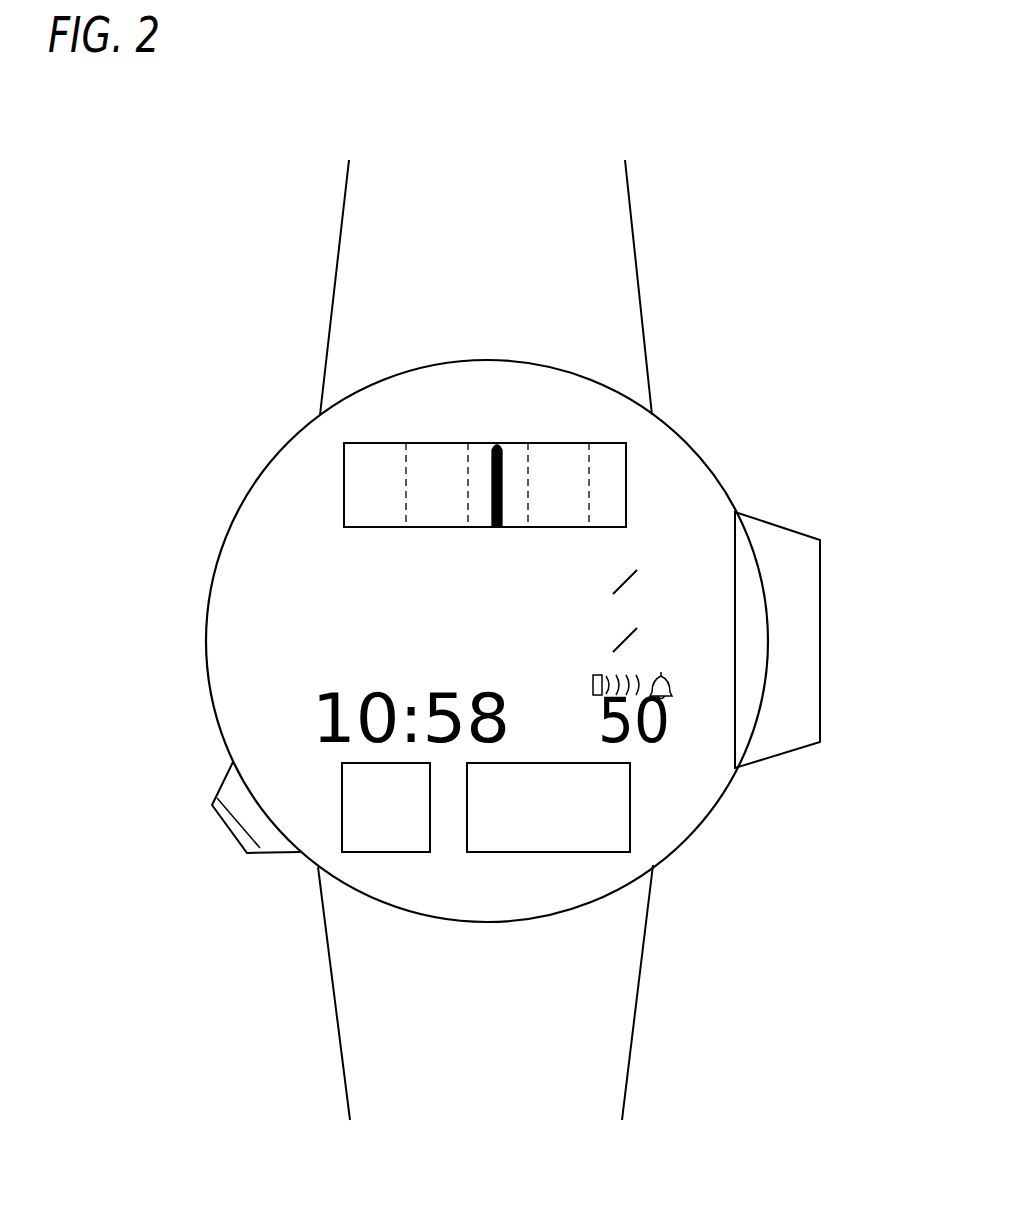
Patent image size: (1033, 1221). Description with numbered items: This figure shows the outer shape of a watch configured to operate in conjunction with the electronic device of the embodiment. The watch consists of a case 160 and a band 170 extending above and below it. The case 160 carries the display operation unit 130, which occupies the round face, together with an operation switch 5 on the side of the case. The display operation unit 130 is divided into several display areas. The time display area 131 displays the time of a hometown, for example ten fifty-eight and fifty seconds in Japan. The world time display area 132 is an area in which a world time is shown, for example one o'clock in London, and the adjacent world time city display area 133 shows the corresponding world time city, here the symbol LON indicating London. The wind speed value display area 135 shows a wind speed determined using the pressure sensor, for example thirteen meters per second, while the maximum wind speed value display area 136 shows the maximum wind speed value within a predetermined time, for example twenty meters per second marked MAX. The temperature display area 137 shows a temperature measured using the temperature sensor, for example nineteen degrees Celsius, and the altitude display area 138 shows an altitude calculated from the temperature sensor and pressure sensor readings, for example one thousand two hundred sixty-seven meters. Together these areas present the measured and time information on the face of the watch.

The operation switch 5 is at (230, 830).
The display operation unit 130 is at (315, 468).
The time display area 131 is at (257, 707).
The world time display area 132 is at (387, 853).
The world time city display area 133 is at (631, 805).
The wind speed value display area 135 is at (653, 557).
The maximum wind speed value display area 136 is at (547, 657).
The temperature display area 137 is at (338, 572).
The altitude display area 138 is at (270, 634).
The case 160 is at (487, 360).
The band 170 is at (640, 286).